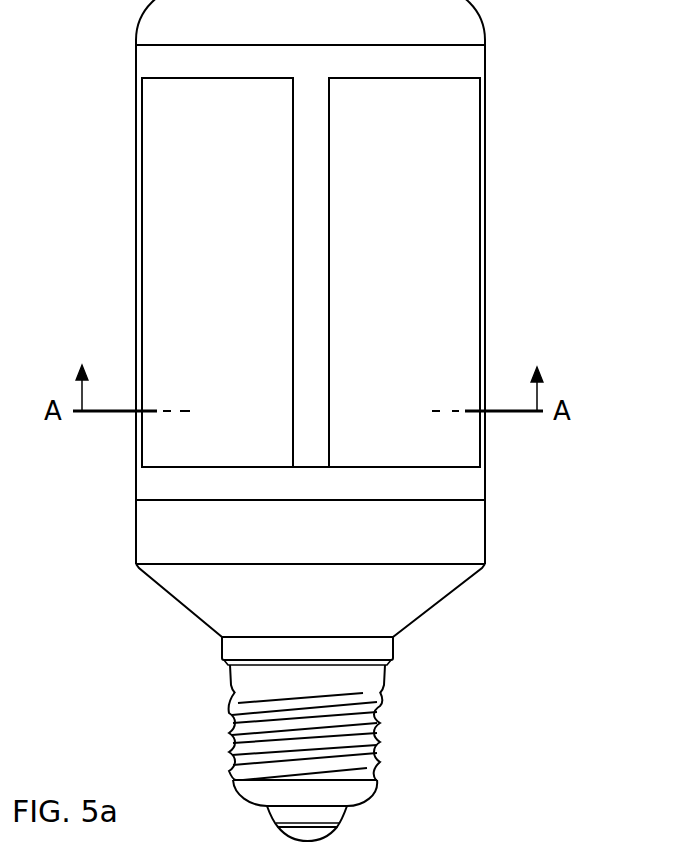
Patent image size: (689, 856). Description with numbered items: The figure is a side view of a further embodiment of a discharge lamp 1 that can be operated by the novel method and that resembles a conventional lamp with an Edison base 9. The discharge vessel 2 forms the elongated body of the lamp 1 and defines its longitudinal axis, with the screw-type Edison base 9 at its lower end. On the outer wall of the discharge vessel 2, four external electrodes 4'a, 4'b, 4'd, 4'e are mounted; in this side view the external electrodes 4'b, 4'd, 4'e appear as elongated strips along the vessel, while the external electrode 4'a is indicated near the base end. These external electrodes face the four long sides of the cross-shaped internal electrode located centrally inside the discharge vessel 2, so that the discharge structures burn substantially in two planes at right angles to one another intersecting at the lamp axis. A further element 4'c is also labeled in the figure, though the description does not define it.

The discharge lamp 1 is at (122, 297).
The discharge vessel 2 is at (180, 150).
The external electrode 4'a is at (472, 851).
The external electrode 4'b is at (446, 272).
The frame bottom rail 4'c is at (366, 484).
The external electrode 4'd is at (464, 272).
The external electrode 4'e is at (83, 272).
The Edison base 9 is at (380, 733).